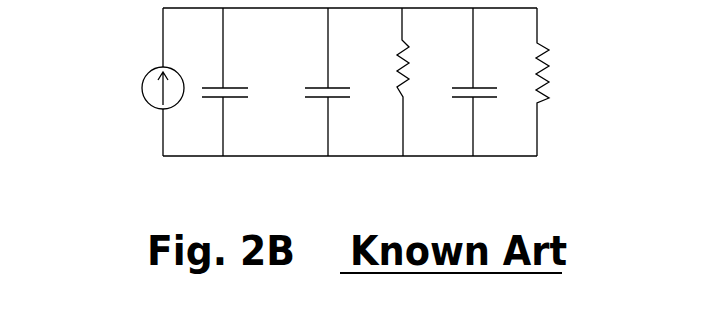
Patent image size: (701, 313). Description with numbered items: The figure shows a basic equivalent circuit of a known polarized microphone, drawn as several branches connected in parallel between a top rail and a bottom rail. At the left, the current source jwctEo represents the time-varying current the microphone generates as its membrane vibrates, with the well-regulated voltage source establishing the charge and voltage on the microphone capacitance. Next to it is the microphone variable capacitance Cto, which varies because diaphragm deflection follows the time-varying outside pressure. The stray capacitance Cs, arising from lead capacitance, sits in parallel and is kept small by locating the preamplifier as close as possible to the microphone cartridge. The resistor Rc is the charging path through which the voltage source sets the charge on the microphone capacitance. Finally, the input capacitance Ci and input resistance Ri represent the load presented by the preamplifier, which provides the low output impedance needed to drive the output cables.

The time-varying current source jwctEo is at (124, 82).
The microphone variable capacitance Cto is at (231, 82).
The stray capacitance Cs is at (332, 82).
The charging resistor Rc is at (419, 82).
The input capacitance Ci is at (480, 82).
The input resistance Ri is at (556, 82).